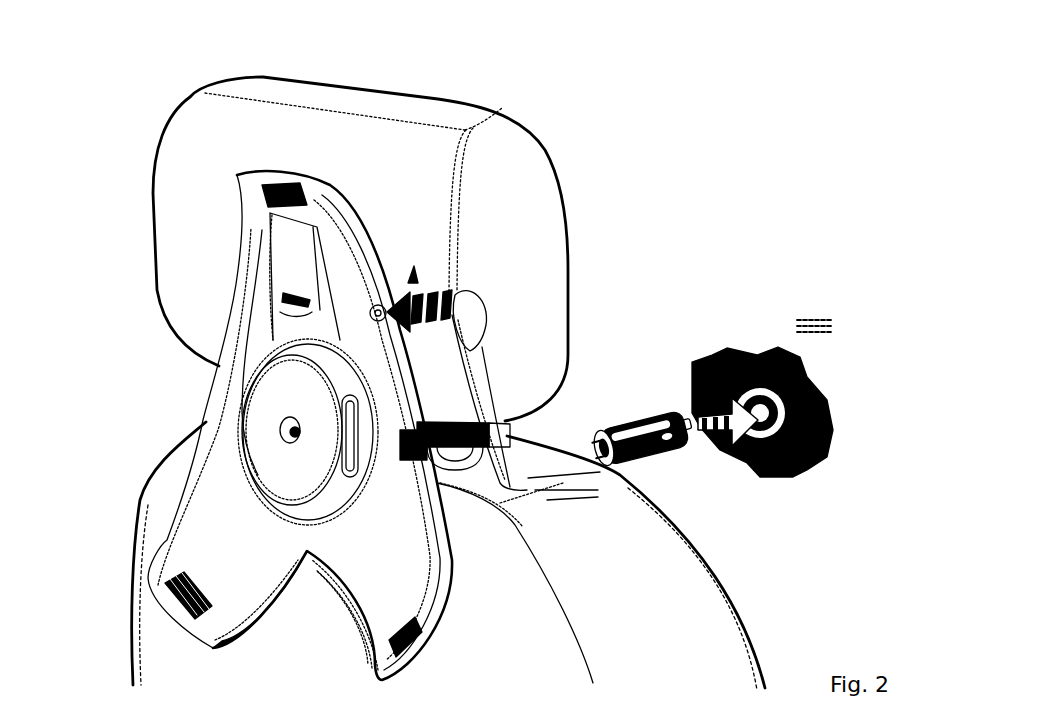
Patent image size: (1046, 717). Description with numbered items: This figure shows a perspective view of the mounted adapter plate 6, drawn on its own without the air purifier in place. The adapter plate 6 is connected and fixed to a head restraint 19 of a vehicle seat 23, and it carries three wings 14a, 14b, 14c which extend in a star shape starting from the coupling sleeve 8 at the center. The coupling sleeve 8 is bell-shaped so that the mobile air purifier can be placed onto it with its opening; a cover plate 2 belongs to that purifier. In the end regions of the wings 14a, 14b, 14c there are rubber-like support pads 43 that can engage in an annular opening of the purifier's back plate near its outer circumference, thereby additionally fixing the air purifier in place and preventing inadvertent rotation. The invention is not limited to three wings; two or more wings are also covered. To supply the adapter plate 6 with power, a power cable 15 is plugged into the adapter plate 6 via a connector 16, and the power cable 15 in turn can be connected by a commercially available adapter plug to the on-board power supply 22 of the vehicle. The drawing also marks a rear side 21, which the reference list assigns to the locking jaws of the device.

The cover plate 2 is at (612, 457).
The adapter plate 6 is at (237, 367).
The coupling sleeve 8 is at (262, 433).
The wing 14a is at (253, 222).
The wing 14b is at (400, 558).
The wing 14c is at (183, 550).
The power cable 15 is at (487, 370).
The connector 16 is at (380, 308).
The head restraint 19 is at (512, 238).
The rear side 21 is at (355, 170).
The on-board power supply 22 is at (829, 478).
The seat 23 is at (652, 598).
The support pads 43 is at (290, 177).